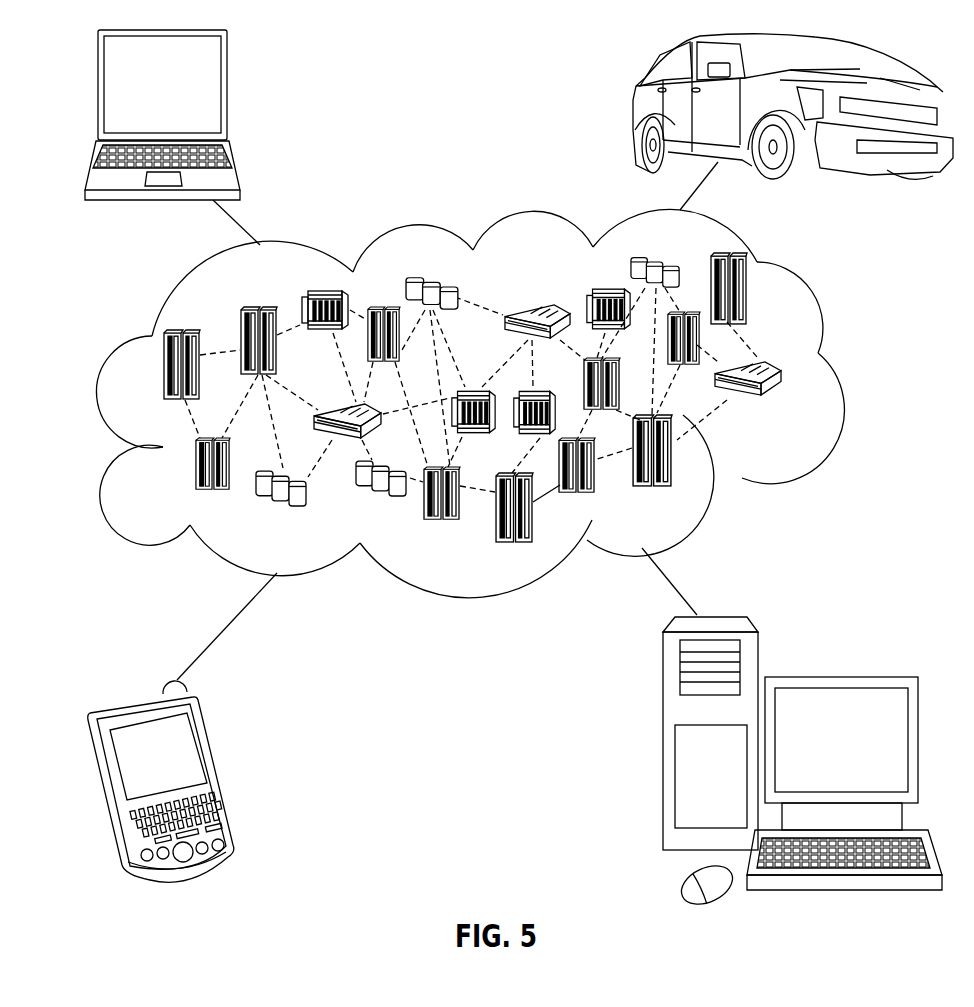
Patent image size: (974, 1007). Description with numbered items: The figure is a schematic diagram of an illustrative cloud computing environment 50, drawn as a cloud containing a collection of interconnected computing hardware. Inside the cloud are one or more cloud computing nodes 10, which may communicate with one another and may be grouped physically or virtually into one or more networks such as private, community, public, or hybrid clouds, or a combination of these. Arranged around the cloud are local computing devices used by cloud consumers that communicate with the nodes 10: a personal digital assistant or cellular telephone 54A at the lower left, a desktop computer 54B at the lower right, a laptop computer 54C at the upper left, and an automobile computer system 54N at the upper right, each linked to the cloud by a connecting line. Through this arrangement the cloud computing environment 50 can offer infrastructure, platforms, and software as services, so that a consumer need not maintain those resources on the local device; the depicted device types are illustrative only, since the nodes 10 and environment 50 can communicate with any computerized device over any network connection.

The cloud computing nodes 10 is at (497, 403).
The cloud computing environment 50 is at (840, 377).
The personal digital assistant (PDA) or cellular telephone 54A is at (217, 772).
The desktop computer 54B is at (840, 675).
The laptop computer 54C is at (227, 92).
The automobile computer system 54N is at (634, 108).